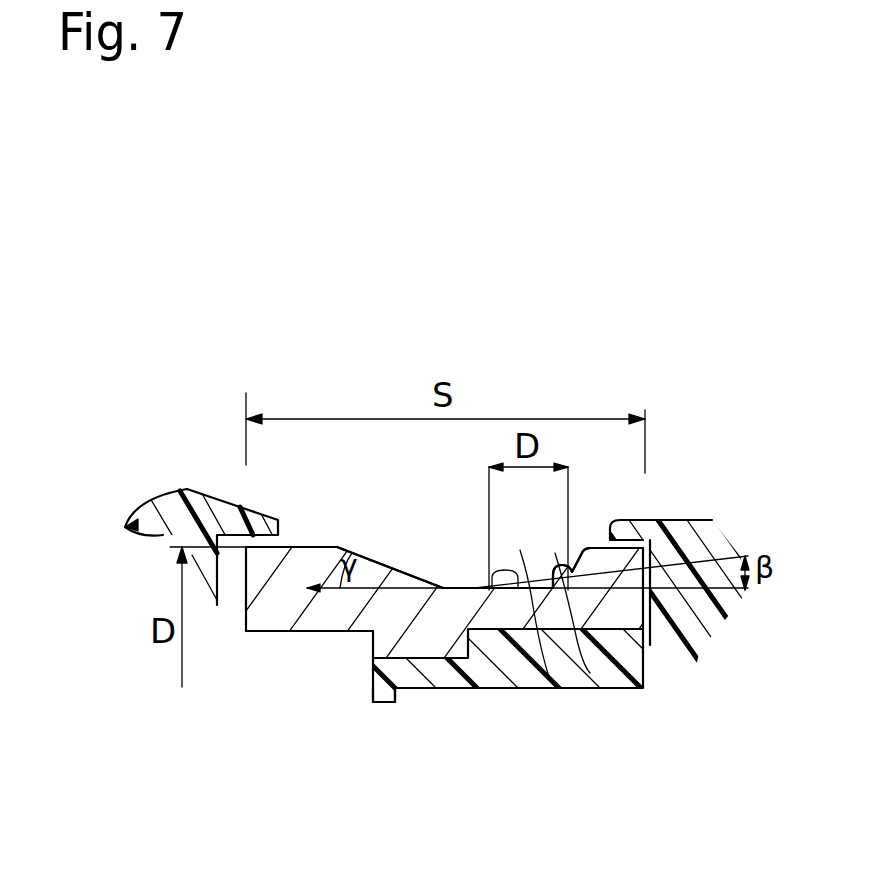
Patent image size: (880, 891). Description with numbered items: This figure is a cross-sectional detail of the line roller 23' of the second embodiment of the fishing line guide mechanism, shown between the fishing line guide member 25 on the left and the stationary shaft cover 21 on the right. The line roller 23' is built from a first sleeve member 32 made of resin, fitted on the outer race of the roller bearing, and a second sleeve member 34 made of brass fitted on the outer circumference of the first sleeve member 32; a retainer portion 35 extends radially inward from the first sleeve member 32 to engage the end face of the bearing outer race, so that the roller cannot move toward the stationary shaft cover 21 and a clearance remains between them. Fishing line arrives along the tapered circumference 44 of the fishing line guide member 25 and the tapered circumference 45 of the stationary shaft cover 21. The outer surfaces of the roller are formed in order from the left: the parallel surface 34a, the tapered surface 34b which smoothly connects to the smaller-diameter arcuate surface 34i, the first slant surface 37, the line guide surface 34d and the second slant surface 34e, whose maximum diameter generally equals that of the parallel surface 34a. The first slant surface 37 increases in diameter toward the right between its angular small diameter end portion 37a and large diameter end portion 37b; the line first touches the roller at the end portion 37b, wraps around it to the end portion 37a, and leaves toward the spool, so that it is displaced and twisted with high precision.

The stationary shaft cover 21 is at (688, 648).
The line roller 23' is at (309, 671).
The fishing line guide member 25 is at (193, 503).
The first sleeve member 32 is at (520, 673).
The second sleeve member 34 is at (423, 660).
The parallel surface 34a is at (303, 547).
The tapered surface 34b is at (405, 585).
The line guide surface 34d is at (572, 572).
The second slant surface 34e is at (593, 540).
The arcuate surface 34i is at (462, 585).
The retainer portion 35 is at (383, 705).
The first slant surface 37 is at (520, 582).
The small diameter end portion 37a is at (550, 680).
The large diameter end portion 37b is at (590, 673).
The tapered circumference 44 is at (243, 507).
The tapered circumference 45 is at (690, 518).